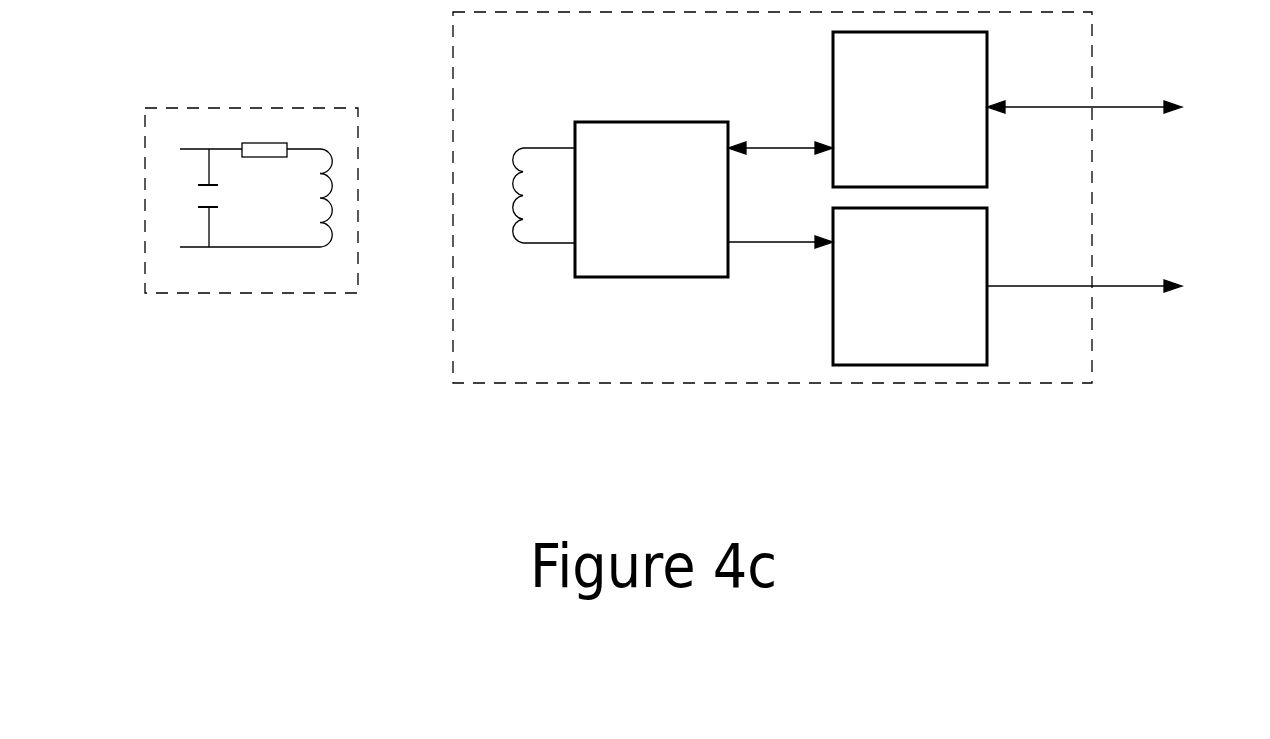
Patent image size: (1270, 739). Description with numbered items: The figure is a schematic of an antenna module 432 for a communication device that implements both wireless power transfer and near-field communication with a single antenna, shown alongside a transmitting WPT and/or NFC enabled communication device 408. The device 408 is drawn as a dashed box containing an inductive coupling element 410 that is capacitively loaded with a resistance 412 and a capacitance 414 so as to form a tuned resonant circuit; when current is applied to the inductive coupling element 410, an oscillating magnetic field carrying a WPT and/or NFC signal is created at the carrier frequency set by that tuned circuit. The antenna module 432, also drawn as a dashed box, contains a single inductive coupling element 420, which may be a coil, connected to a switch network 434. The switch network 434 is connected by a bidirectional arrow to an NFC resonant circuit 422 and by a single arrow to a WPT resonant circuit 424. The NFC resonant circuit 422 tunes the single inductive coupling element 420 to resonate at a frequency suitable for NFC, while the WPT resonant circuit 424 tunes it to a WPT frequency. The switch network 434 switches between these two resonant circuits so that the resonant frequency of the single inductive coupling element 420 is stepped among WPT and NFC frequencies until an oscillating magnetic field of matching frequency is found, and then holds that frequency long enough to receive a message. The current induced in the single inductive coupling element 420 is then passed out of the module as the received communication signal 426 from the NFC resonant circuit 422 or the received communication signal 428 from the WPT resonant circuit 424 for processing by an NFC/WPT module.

The WPT and/or NFC enabled communication device 408 is at (242, 293).
The inductive coupling element 410 is at (313, 187).
The resistance 412 is at (265, 143).
The capacitance 414 is at (203, 217).
The single inductive coupling element 420 is at (523, 148).
The NFC resonant circuit 422 is at (987, 92).
The WPT resonant circuit 424 is at (987, 253).
The received communication signal 426 is at (1118, 107).
The received communication signal 428 is at (1137, 286).
The antenna module 432 is at (837, 383).
The switch network 434 is at (635, 122).